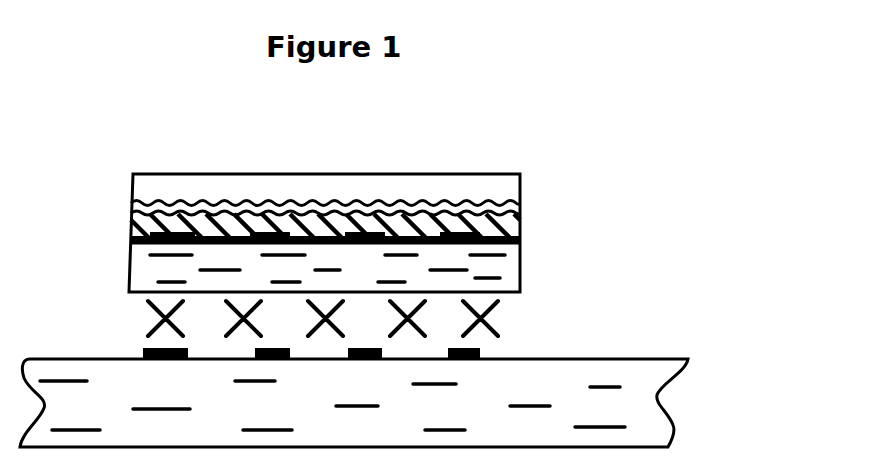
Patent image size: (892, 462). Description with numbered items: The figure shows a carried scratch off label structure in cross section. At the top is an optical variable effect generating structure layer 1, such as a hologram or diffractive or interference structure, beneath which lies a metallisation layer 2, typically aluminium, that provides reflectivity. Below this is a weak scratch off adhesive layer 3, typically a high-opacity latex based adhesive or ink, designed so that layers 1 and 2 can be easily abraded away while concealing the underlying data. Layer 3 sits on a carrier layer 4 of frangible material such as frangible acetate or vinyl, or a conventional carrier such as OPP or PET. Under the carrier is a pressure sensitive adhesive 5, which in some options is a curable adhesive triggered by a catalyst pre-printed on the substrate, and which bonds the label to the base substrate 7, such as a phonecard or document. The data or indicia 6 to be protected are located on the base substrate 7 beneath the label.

The optical variable effect generating structure layer 1 is at (505, 186).
The metallisation layer 2 is at (510, 207).
The scratch off adhesive layer 3 is at (515, 228).
The carrier layer 4 is at (500, 277).
The pressure sensitive adhesive 5 is at (457, 323).
The data or indicia 6 is at (515, 245).
The substrate 7 is at (630, 401).